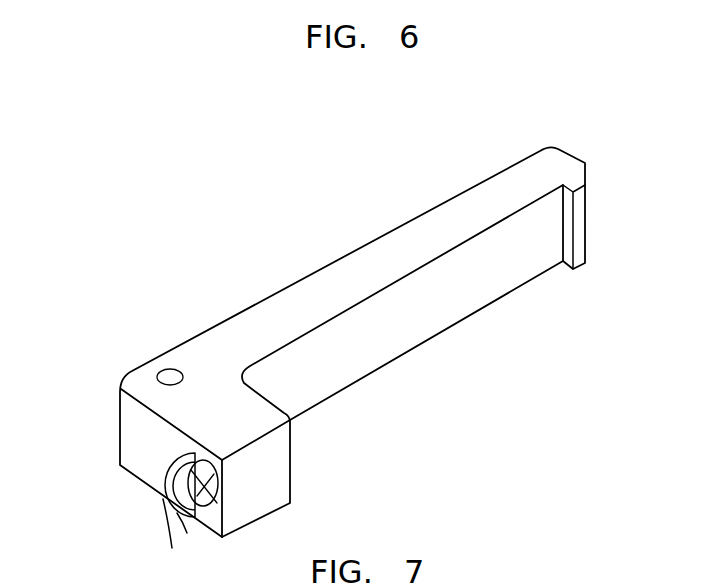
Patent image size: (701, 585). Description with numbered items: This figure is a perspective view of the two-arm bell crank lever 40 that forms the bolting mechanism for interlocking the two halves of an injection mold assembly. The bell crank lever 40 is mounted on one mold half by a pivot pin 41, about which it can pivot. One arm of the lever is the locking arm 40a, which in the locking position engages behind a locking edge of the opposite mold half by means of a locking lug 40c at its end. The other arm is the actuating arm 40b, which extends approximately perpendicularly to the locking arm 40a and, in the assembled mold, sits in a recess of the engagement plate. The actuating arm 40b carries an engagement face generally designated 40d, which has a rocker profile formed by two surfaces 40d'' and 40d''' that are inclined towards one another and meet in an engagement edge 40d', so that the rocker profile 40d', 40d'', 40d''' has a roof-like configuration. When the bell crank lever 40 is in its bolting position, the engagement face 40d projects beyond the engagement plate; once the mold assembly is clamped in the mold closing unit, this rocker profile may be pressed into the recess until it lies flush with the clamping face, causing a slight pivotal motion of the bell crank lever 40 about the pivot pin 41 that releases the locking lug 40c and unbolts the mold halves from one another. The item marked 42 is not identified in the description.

In FIG. 6, the two-arm bell crank lever 40 is at (424, 348).
In FIG. 6, the locking arm 40a is at (292, 321).
In FIG. 6, the actuating arm 40b is at (230, 420).
In FIG. 7, the actuating arm 40b is at (93, 580).
In FIG. 6, the locking lug 40c is at (572, 233).
In FIG. 6, the engagement face 40d is at (222, 510).
In FIG. 6, the engagement edge 40d' is at (176, 541).
In FIG. 6, the inclined surface of rocker profile 40d'' is at (272, 483).
In FIG. 6, the inclined surface of rocker profile 40d''' is at (127, 463).
In FIG. 6, the pivot pin 41 is at (168, 369).
In FIG. 7, the pivot pin 41 is at (210, 580).
In FIG. 6, the pin 42 is at (205, 493).